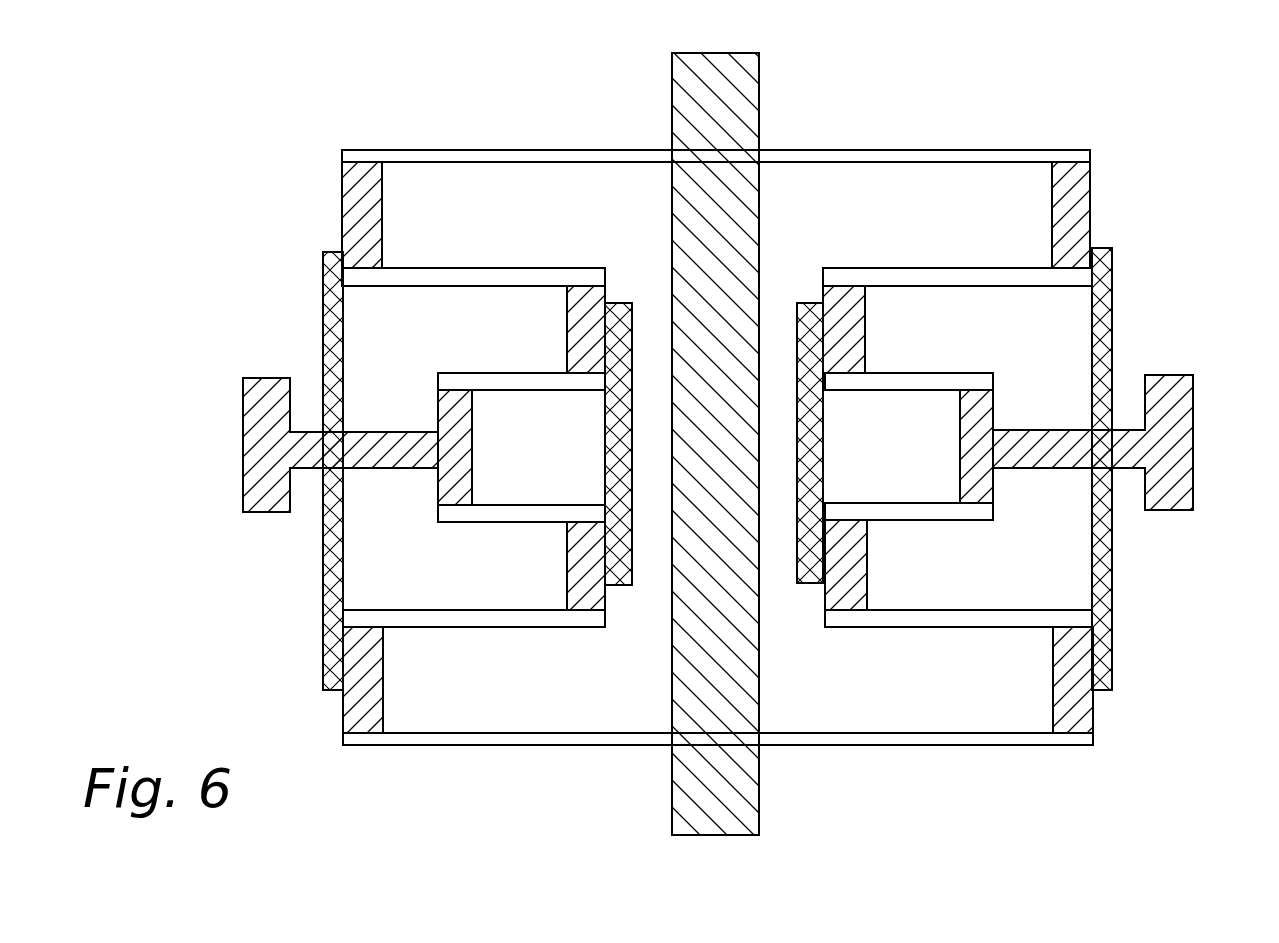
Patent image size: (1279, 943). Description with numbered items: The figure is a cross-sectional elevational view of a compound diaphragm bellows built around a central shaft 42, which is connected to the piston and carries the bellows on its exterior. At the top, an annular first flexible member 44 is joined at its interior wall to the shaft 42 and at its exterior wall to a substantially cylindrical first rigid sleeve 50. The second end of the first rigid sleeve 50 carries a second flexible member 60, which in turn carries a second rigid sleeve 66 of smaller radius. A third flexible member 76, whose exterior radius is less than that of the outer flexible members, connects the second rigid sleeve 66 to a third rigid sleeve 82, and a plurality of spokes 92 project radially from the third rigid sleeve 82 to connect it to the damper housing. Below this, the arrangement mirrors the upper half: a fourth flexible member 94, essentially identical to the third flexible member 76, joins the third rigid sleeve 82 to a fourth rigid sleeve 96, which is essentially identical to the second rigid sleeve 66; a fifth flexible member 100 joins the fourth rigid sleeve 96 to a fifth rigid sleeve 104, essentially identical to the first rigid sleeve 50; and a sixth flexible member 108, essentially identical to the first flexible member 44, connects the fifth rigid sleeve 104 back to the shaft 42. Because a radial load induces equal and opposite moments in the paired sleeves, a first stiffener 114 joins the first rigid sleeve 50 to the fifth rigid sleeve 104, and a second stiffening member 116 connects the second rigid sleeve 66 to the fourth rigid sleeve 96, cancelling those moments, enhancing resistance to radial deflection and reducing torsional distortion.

The shaft 42 is at (670, 62).
The first flexible member 44 is at (890, 148).
The first rigid sleeve 50 is at (341, 177).
The second flexible member 60 is at (421, 266).
The second rigid sleeve 66 is at (565, 330).
The third flexible member 76 is at (894, 372).
The third rigid sleeve 82 is at (474, 434).
The spokes 92 is at (376, 470).
The fourth flexible member 94 is at (886, 522).
The fourth rigid sleeve 96 is at (565, 567).
The fifth flexible member 100 is at (476, 630).
The fifth rigid sleeve 104 is at (341, 717).
The sixth flexible member 108 is at (494, 746).
The first stiffener 114 is at (1114, 322).
The second stiffening member 116 is at (828, 445).